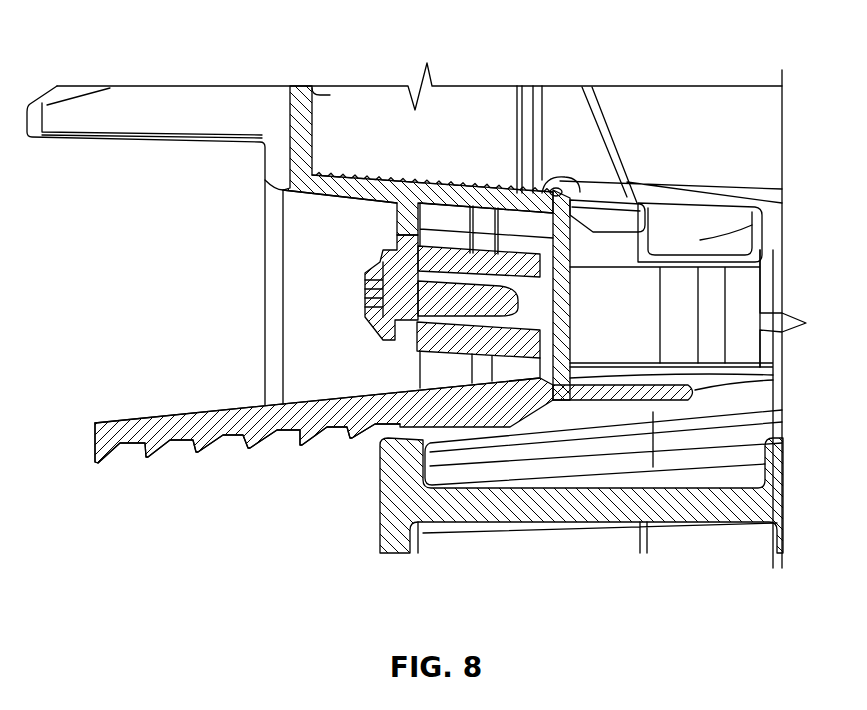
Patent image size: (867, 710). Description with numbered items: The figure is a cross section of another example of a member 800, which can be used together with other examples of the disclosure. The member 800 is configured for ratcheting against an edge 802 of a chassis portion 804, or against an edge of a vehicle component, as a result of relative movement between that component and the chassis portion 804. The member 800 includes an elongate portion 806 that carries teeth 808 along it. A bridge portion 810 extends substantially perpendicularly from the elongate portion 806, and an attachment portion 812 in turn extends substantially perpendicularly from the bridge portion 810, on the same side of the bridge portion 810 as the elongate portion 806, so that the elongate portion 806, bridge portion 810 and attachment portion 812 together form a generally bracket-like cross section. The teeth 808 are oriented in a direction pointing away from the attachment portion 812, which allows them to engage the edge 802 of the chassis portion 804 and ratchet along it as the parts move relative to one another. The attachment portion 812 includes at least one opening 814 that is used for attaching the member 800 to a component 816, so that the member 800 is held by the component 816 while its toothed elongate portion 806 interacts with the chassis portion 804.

The member 800 is at (366, 423).
The edge 802 is at (380, 442).
The chassis portion 804 is at (493, 542).
The elongate portion 806 is at (186, 405).
The teeth 808 is at (147, 453).
The bridge portion 810 is at (533, 360).
The attachment portion 812 is at (447, 247).
The opening 814 is at (553, 307).
The component 816 is at (327, 170).